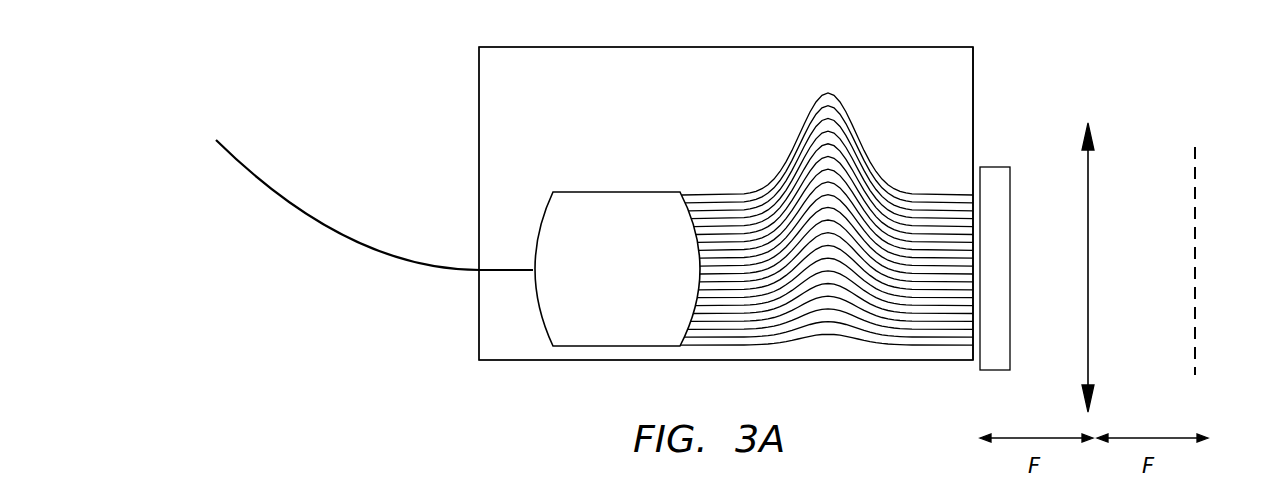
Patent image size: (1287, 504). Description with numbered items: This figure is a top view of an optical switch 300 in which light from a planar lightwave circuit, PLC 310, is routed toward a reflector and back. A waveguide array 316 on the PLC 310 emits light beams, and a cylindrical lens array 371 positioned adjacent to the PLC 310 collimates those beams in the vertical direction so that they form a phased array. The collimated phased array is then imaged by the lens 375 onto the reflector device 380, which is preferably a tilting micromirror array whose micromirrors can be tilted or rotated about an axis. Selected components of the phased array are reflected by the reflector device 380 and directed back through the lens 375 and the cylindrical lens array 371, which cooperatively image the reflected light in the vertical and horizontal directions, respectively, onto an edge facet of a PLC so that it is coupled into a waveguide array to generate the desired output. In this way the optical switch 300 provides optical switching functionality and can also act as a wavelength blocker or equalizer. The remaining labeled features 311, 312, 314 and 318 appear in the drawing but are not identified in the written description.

The optical switch 300 is at (400, 50).
The PLC 310 is at (726, 203).
The optical fiber 311 is at (251, 177).
The fiber output end 312 is at (505, 268).
The lens 314 is at (618, 190).
The waveguide array 316 is at (948, 112).
The housing output wall 318 is at (975, 94).
The cylindrical lens array 371 is at (1000, 167).
The lens 375 is at (1097, 136).
The reflector device 380 is at (1196, 148).